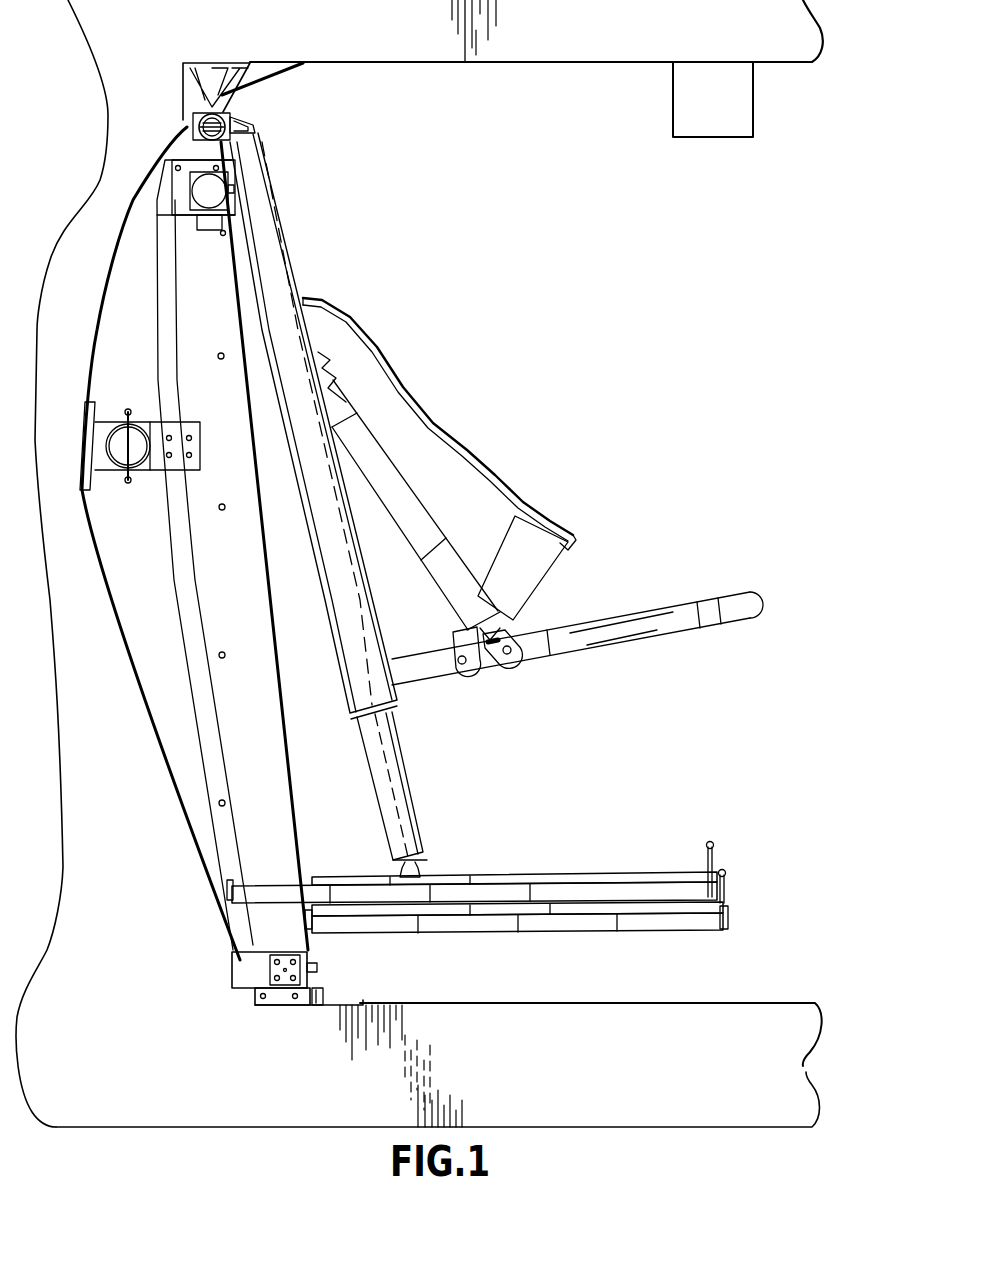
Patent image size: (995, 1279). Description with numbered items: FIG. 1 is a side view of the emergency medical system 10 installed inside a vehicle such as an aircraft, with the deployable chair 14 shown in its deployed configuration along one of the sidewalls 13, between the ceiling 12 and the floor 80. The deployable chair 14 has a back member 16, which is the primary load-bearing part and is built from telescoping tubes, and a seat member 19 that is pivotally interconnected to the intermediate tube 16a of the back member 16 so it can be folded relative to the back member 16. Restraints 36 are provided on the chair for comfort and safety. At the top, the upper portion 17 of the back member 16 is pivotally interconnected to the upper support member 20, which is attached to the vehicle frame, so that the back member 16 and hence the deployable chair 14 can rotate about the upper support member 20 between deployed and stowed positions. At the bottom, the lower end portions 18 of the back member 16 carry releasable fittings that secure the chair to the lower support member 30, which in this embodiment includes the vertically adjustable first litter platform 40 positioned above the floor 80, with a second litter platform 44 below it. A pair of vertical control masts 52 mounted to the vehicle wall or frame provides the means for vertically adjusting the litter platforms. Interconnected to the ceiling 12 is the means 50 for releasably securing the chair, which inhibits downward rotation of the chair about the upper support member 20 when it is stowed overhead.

The system 10 is at (663, 280).
The ceiling 12 is at (540, 68).
The sidewalls 13 is at (113, 605).
The deployable chair 14 is at (345, 292).
The back member 16 is at (322, 600).
The intermediate tube 16a is at (380, 633).
The upper portion 17 is at (258, 122).
The lower end portions 18 is at (426, 870).
The seat member 19 is at (766, 604).
The upper support member 20 is at (245, 108).
The lower support member 30 is at (578, 868).
The restraints 36 is at (500, 478).
The first litter platform 40 is at (664, 880).
The second litter platform 44 is at (684, 925).
The means for releasably securing 50 is at (672, 138).
The vertical control masts 52 is at (263, 496).
The floor 80 is at (511, 1000).